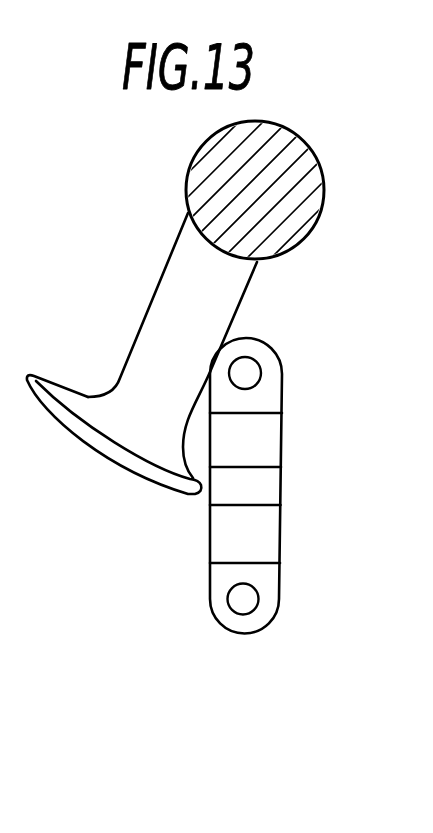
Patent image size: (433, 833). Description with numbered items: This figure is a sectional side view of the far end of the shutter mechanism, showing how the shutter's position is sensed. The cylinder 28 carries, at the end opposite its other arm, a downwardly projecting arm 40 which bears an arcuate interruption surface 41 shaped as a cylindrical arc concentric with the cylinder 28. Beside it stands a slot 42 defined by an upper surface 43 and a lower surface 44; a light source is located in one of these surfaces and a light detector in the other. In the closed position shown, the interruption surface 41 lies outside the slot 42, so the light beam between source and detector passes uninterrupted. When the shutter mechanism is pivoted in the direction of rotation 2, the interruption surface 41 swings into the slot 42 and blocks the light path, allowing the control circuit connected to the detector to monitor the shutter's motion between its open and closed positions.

The direction of rotation 2 is at (15, 352).
The cylinder 28 is at (194, 162).
The downwardly projecting arm 40 is at (166, 265).
The arcuate interruption surface 41 is at (122, 470).
The slot 42 is at (265, 487).
The upper surface 43 is at (266, 467).
The lower surface 44 is at (268, 509).